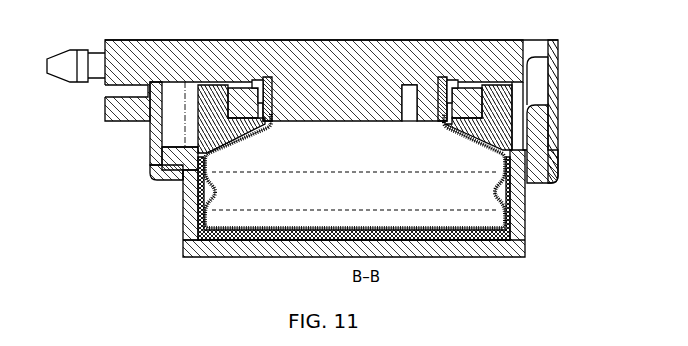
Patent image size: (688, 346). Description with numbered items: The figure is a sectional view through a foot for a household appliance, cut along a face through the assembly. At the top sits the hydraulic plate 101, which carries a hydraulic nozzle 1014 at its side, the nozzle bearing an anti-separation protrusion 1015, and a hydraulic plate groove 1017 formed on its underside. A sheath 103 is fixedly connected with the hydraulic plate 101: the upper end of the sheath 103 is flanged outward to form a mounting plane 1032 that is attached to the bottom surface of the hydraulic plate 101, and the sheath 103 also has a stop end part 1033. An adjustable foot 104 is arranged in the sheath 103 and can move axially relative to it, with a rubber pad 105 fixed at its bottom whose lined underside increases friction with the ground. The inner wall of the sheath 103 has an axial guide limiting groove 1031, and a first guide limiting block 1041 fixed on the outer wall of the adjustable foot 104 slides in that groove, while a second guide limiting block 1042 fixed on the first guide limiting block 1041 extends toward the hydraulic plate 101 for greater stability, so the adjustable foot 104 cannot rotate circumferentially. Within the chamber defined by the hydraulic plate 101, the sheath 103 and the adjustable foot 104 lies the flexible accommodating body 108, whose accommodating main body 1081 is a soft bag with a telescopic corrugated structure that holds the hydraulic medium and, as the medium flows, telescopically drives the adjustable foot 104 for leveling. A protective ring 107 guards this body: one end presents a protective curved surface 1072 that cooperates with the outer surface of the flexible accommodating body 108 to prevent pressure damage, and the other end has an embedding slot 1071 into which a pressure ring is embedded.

The hydraulic plate 101 is at (487, 38).
The hydraulic nozzle 1014 is at (72, 62).
The anti-separation protrusion 1015 is at (88, 53).
The hydraulic plate groove 1017 is at (256, 78).
The embedding slot 1071 is at (158, 117).
The protective ring 107 is at (205, 130).
The protective curved surface 1072 is at (196, 148).
The sheath 103 is at (152, 173).
The stop end part 1033 is at (181, 180).
The adjustable foot 104 is at (184, 236).
The rubber pad 105 is at (298, 250).
The flexible accommodating body 108 is at (426, 238).
The accommodating main body 1081 is at (507, 215).
The guide limiting groove 1031 is at (538, 77).
The mounting plane 1032 is at (551, 62).
The first guide limiting block 1041 is at (538, 165).
The second guide limiting block 1042 is at (542, 127).